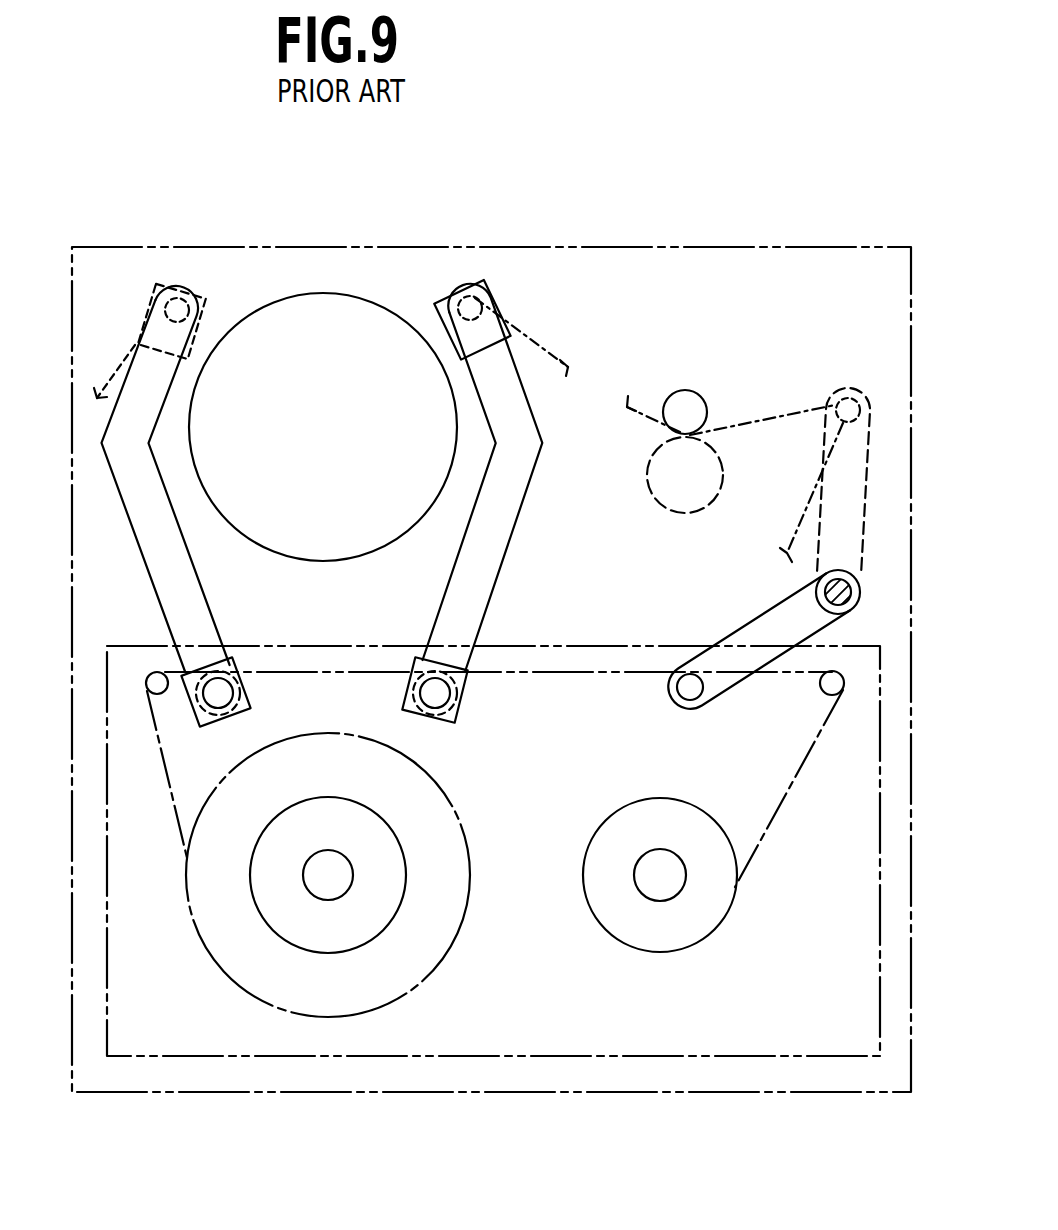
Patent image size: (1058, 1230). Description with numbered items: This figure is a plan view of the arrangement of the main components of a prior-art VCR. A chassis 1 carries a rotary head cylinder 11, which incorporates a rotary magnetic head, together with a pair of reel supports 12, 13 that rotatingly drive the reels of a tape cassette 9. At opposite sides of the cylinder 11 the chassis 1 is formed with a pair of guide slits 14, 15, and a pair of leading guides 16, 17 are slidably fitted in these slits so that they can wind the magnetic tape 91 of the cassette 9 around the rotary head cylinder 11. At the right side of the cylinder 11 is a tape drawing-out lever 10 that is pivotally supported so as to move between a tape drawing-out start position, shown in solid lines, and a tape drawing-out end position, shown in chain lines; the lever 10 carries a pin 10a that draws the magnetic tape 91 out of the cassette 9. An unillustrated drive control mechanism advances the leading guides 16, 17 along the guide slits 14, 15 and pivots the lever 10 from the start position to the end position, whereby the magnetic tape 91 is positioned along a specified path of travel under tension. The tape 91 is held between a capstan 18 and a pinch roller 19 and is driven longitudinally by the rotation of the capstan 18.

The chassis 1 is at (691, 247).
The tape cassette 9 is at (287, 1056).
The tape drawing-out lever 10 is at (760, 624).
The pin 10a is at (842, 398).
The rotary head cylinder 11 is at (313, 525).
The reel support 12 is at (292, 922).
The reel support 13 is at (603, 877).
The guide slit 14 is at (172, 597).
The guide slit 15 is at (468, 597).
The leading guide 16 is at (178, 300).
The leading guide 17 is at (470, 298).
The capstan 18 is at (668, 398).
The pinch roller 19 is at (655, 492).
The magnetic tape 91 is at (566, 356).